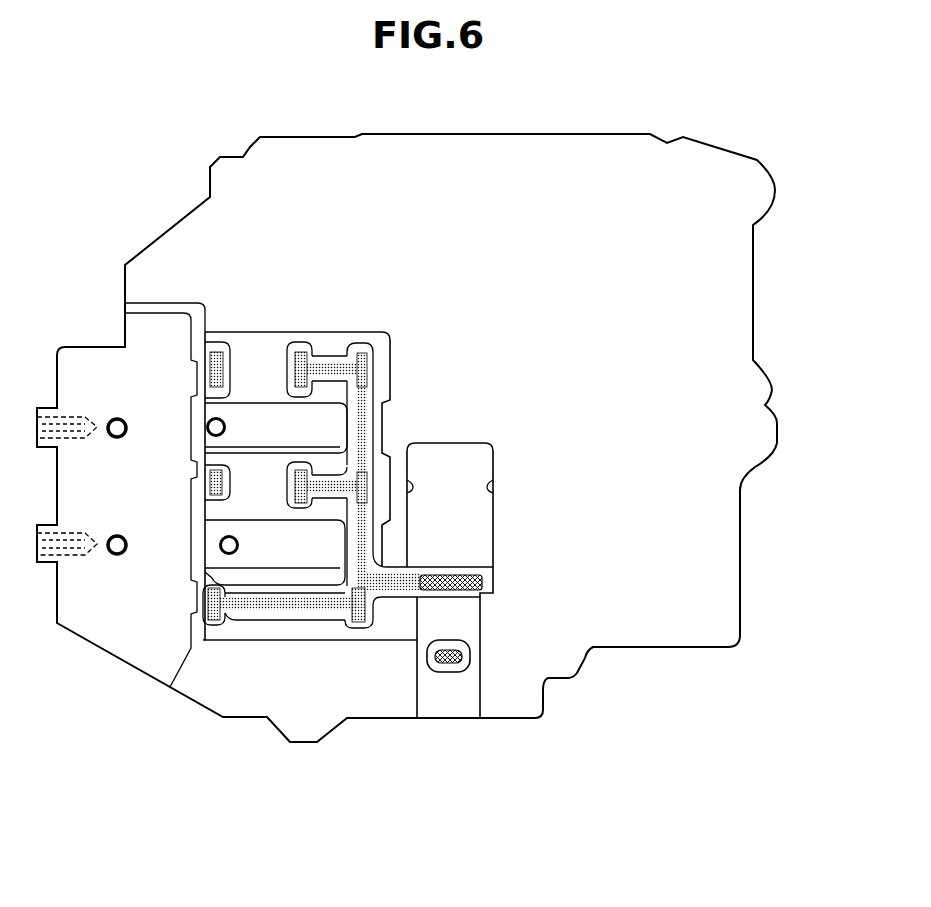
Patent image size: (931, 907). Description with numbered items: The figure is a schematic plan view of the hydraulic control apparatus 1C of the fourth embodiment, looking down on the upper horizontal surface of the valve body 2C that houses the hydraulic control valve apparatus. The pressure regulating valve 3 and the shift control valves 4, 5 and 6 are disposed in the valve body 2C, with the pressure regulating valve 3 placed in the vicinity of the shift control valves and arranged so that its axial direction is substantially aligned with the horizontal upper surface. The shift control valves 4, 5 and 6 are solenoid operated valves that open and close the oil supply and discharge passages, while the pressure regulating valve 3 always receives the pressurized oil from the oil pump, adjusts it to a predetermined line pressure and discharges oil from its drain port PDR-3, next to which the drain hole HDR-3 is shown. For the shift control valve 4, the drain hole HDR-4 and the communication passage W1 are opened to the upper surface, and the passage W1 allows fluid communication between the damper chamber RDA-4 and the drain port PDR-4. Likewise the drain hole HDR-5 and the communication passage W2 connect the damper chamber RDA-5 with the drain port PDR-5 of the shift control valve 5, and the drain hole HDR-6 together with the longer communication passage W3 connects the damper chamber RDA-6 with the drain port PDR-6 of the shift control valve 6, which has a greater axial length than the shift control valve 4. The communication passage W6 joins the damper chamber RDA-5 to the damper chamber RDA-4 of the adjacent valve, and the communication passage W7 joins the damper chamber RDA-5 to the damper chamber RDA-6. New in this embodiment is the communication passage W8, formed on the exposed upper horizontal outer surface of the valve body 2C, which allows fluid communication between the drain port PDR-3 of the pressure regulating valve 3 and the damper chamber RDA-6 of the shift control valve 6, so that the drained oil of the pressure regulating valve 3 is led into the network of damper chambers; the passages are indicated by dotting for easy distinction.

The hydraulic control apparatus 1C is at (104, 167).
The valve body 2C is at (774, 191).
The pressure regulating valve 3 is at (492, 540).
The shift control valve 4 is at (248, 332).
The shift control valve 5 is at (215, 481).
The shift control valve 6 is at (313, 640).
The drain hole HDR-3 is at (482, 589).
The drain port PDR-3 is at (483, 584).
The drain hole HDR-4 is at (293, 316).
The drain port PDR-4 is at (302, 354).
The drain hole HDR-5 is at (294, 469).
The drain port PDR-5 is at (298, 489).
The drain hole HDR-6 is at (216, 673).
The drain port PDR-6 is at (213, 621).
The communication passage W1 is at (338, 361).
The communication passage W2 is at (330, 473).
The communication passage W3 is at (268, 611).
The communication passage W6 is at (366, 420).
The communication passage W7 is at (353, 547).
The communication passage W8 is at (395, 593).
The damper chamber RDA-4 is at (363, 352).
The damper chamber RDA-5 is at (380, 465).
The damper chamber RDA-6 is at (362, 633).